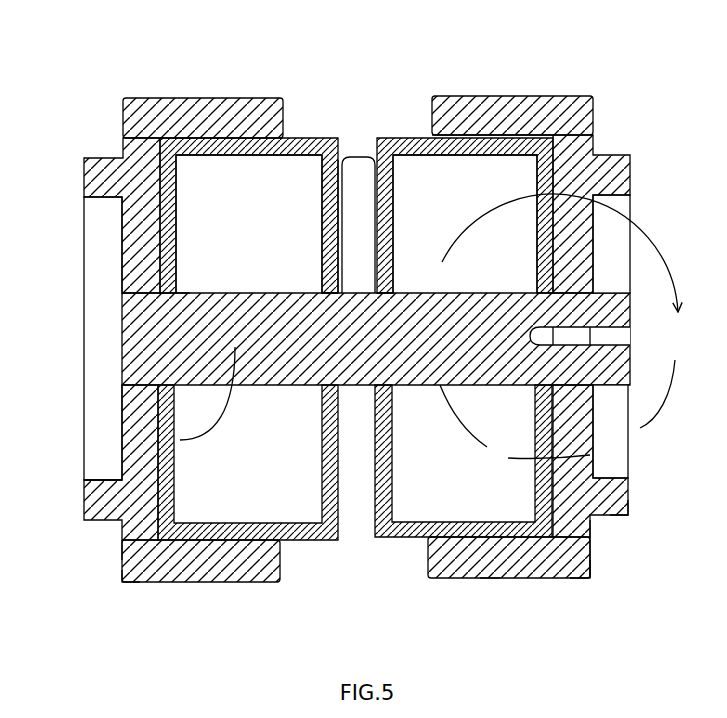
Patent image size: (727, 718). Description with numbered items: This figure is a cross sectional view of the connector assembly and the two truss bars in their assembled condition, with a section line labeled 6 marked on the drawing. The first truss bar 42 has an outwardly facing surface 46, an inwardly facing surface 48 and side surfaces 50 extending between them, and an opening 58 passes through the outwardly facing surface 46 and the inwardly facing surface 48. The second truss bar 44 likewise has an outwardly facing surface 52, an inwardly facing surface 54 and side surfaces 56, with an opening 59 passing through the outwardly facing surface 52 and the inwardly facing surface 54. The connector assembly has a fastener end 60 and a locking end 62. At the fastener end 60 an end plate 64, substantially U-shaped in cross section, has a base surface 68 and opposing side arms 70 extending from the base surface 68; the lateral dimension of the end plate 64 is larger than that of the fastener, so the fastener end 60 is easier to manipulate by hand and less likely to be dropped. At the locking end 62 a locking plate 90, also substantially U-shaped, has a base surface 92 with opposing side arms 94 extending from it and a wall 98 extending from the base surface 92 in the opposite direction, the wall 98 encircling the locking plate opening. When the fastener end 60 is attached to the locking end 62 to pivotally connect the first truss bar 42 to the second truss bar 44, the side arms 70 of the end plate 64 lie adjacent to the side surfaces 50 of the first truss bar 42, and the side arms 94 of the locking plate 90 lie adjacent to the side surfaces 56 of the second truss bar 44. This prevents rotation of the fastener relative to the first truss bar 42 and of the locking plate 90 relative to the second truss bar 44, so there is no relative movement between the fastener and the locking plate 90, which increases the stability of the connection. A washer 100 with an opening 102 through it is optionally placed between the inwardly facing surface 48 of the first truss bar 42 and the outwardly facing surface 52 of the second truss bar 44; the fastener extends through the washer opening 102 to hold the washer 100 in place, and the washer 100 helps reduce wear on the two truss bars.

The section line for FIG. 6 is at (180, 440).
The first truss bar 42 is at (313, 132).
The second truss bar 44 is at (408, 132).
The outwardly facing surface 46 is at (122, 262).
The inwardly facing surface 48 is at (333, 540).
The side surfaces 50 is at (297, 132).
The outwardly facing surface 52 is at (362, 540).
The inwardly facing surface 54 is at (598, 140).
The side surfaces 56 is at (428, 134).
The opening 58 is at (188, 291).
The opening 59 is at (397, 291).
The fastener end 60 is at (126, 630).
The locking end 62 is at (497, 620).
The end plate 64 is at (117, 537).
The base surface 68 is at (120, 558).
The side arms 70 is at (196, 98).
The locking plate 90 is at (596, 539).
The base surface 92 is at (592, 560).
The side arms 94 is at (490, 108).
The wall 98 is at (598, 516).
The washer 100 is at (356, 190).
The opening 102 is at (352, 290).